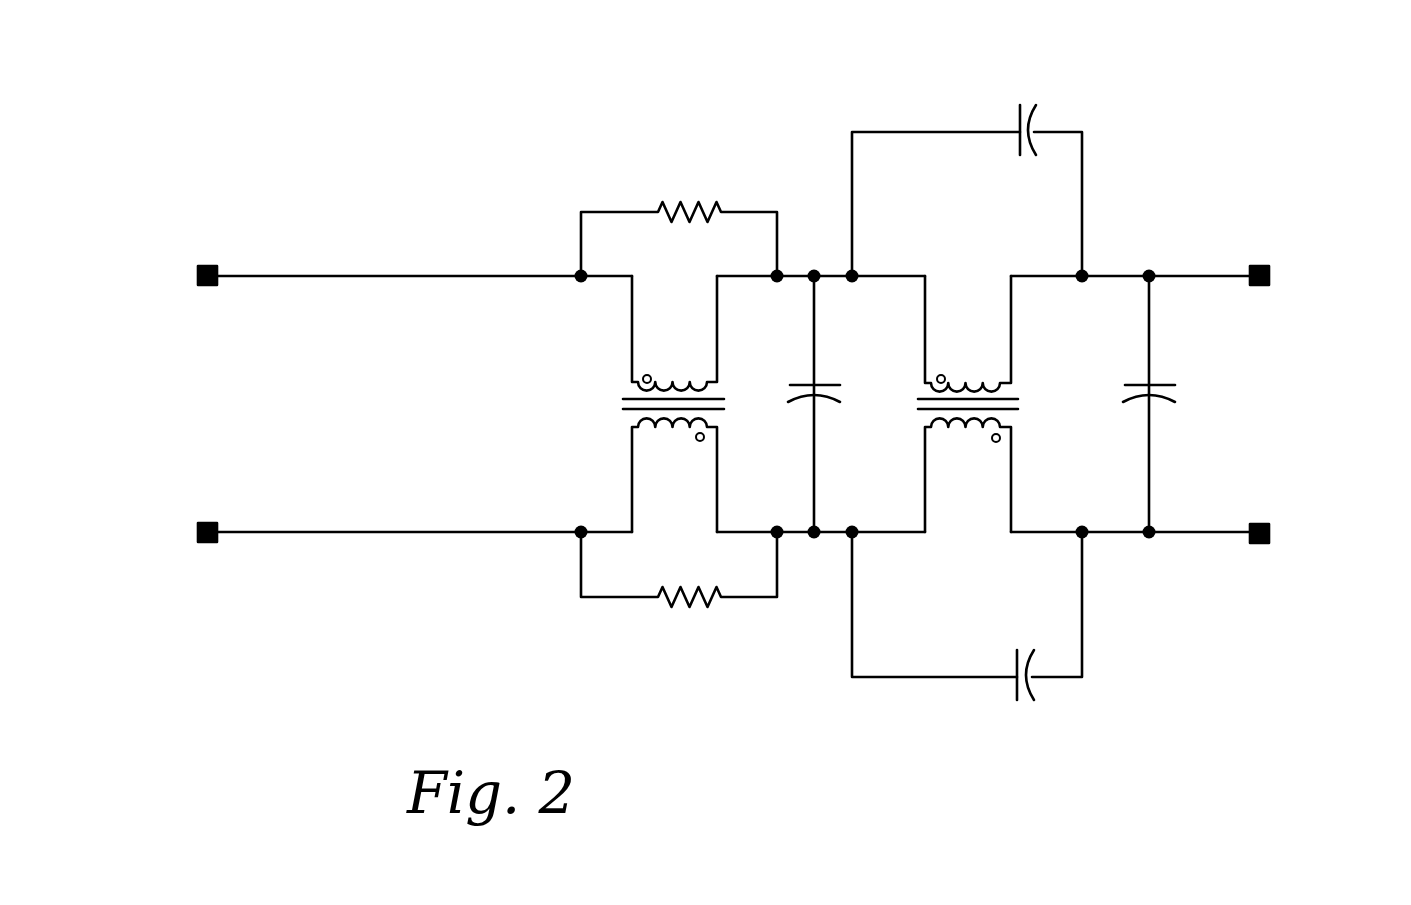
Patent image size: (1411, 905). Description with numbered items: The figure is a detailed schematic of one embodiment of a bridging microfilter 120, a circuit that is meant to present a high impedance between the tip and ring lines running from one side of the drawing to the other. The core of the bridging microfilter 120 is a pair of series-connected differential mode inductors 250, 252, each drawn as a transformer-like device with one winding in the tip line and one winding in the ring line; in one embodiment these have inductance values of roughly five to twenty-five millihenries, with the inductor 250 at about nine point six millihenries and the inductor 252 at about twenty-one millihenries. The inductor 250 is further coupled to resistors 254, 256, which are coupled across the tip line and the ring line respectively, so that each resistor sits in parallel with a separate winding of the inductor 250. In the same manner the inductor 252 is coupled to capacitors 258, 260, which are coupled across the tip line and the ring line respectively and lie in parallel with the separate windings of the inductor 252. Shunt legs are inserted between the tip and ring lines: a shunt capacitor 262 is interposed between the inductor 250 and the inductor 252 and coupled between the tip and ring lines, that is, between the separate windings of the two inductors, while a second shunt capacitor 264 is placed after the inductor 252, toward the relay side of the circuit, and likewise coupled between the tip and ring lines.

The bridging microfilter 120 is at (1258, 130).
The differential mode inductor 250 is at (617, 402).
The differential mode inductor 252 is at (1023, 402).
The resistor 254 is at (688, 200).
The resistor 256 is at (685, 610).
The capacitor 258 is at (1017, 137).
The capacitor 260 is at (1015, 687).
The shunt capacitor 262 is at (828, 383).
The shunt capacitor 264 is at (1163, 383).